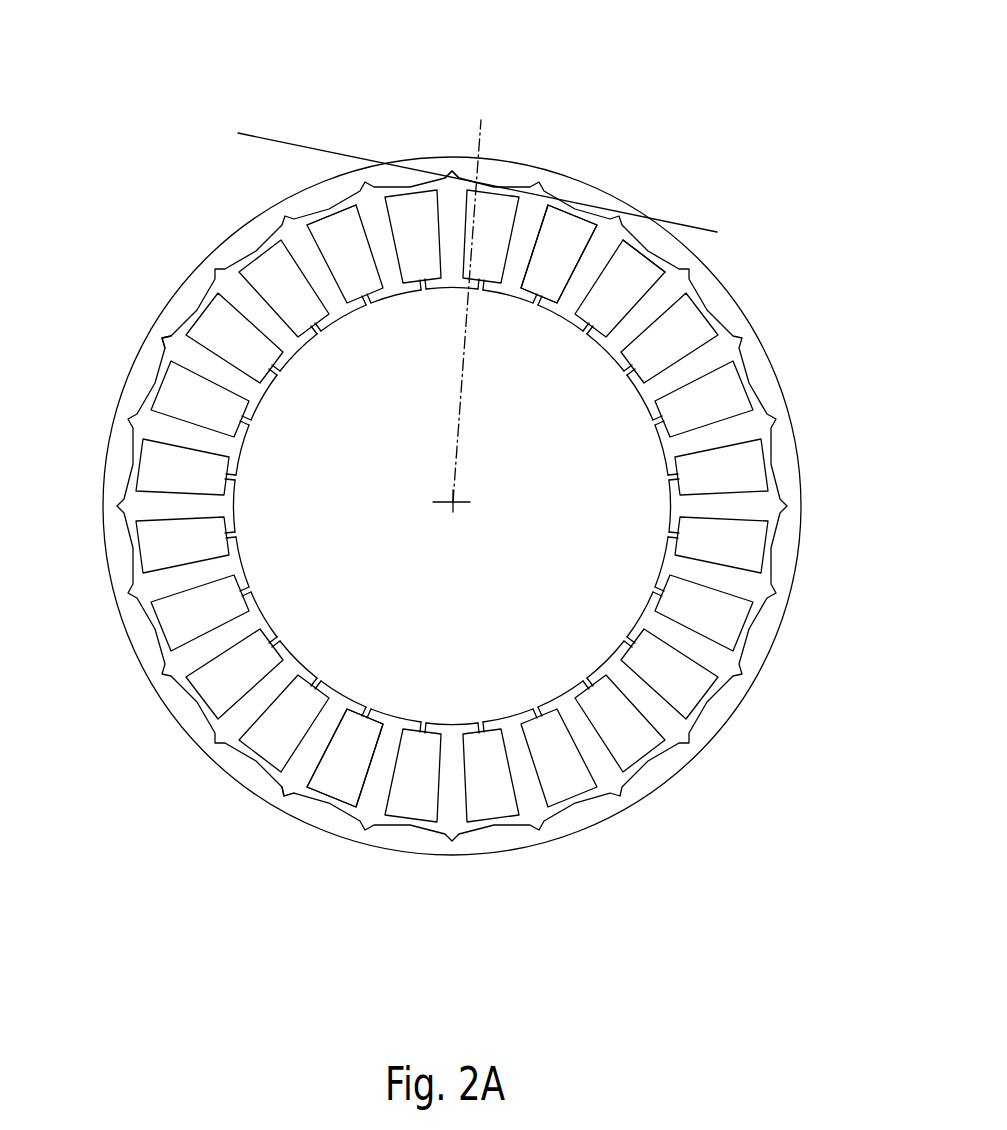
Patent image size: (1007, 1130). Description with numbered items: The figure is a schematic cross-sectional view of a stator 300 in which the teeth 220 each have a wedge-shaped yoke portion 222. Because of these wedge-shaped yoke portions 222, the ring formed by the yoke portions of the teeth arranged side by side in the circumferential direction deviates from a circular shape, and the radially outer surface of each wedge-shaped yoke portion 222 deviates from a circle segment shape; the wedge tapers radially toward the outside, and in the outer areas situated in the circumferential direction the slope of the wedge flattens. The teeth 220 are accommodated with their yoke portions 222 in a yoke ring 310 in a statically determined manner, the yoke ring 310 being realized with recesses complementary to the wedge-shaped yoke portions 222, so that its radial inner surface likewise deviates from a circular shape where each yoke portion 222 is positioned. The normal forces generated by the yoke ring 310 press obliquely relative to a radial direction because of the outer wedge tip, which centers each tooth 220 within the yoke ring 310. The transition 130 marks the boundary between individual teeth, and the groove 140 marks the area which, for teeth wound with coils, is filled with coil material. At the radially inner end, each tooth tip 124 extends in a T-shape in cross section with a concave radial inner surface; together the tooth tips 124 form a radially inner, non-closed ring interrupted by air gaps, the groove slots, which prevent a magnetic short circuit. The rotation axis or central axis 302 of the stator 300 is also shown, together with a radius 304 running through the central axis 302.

The stator 300 is at (150, 78).
The yoke ring 310 is at (660, 233).
The wedge-shaped yoke portion 222 is at (163, 320).
The transition 130 is at (327, 207).
The tooth 220 is at (430, 222).
The groove 140 is at (563, 240).
The tooth tip 124 is at (455, 290).
The central axis 302 is at (422, 502).
The radius 304 is at (465, 376).